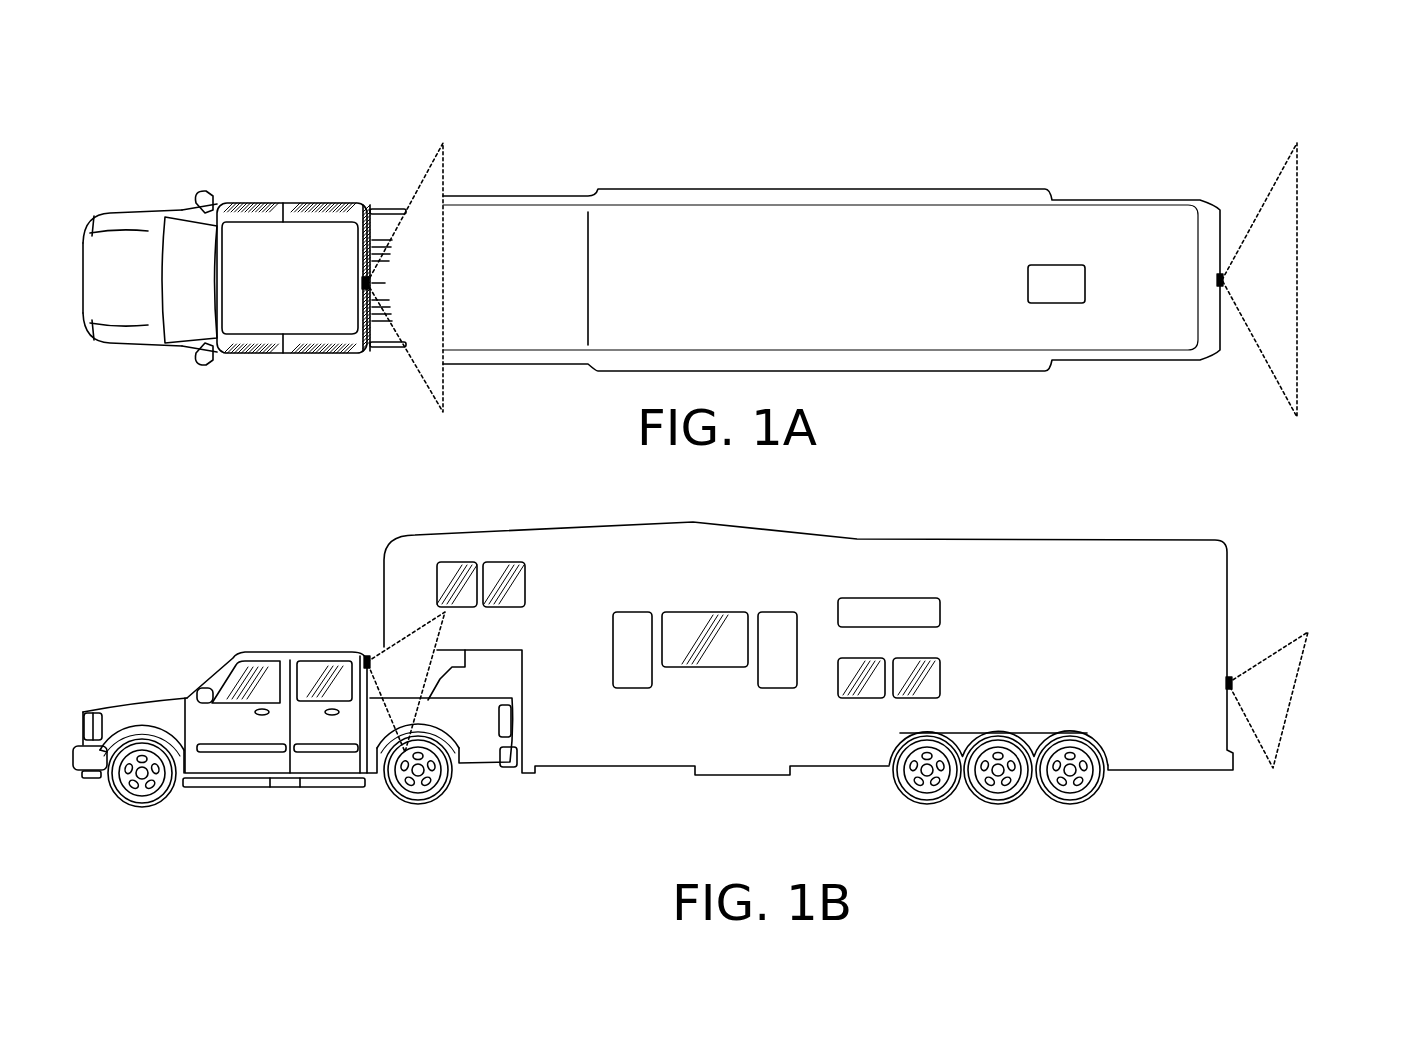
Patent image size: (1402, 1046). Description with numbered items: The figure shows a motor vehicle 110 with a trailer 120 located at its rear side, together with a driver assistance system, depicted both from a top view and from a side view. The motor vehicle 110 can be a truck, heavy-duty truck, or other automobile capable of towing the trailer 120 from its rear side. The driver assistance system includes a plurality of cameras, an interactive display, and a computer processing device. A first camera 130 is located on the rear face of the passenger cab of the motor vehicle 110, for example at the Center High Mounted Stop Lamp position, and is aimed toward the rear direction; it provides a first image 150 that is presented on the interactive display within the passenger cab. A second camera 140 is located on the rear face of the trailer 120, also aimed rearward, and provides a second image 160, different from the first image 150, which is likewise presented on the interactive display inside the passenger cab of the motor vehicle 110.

In FIG. 1A, the motor vehicle 110 is at (170, 150).
In FIG. 1B, the motor vehicle 110 is at (175, 647).
In FIG. 1A, the trailer 120 is at (740, 146).
In FIG. 1B, the trailer 120 is at (1005, 513).
In FIG. 1A, the first camera 130 is at (349, 279).
In FIG. 1B, the first camera 130 is at (355, 650).
In FIG. 1A, the second camera 140 is at (1207, 276).
In FIG. 1B, the second camera 140 is at (1242, 665).
In FIG. 1A, the first image 150 is at (462, 173).
In FIG. 1B, the first image 150 is at (399, 624).
In FIG. 1A, the second image 160 is at (1316, 208).
In FIG. 1B, the second image 160 is at (1315, 714).